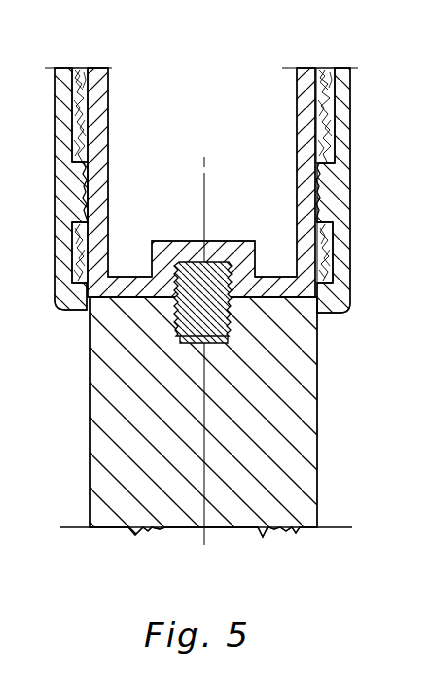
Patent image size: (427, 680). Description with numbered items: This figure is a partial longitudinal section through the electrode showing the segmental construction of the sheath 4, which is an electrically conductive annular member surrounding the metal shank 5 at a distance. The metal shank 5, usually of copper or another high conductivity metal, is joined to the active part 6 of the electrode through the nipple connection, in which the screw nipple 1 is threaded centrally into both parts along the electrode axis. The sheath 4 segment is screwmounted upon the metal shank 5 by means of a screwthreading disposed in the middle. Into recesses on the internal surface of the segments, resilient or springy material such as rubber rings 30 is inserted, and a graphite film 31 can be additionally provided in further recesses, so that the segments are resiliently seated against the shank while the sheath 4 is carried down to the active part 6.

The screw nipple 1 is at (187, 250).
The sheath 4 is at (63, 128).
The metal shank 5 is at (300, 110).
The active part 6 is at (214, 518).
The rubber rings 30 is at (82, 72).
The graphite film 31 is at (85, 245).